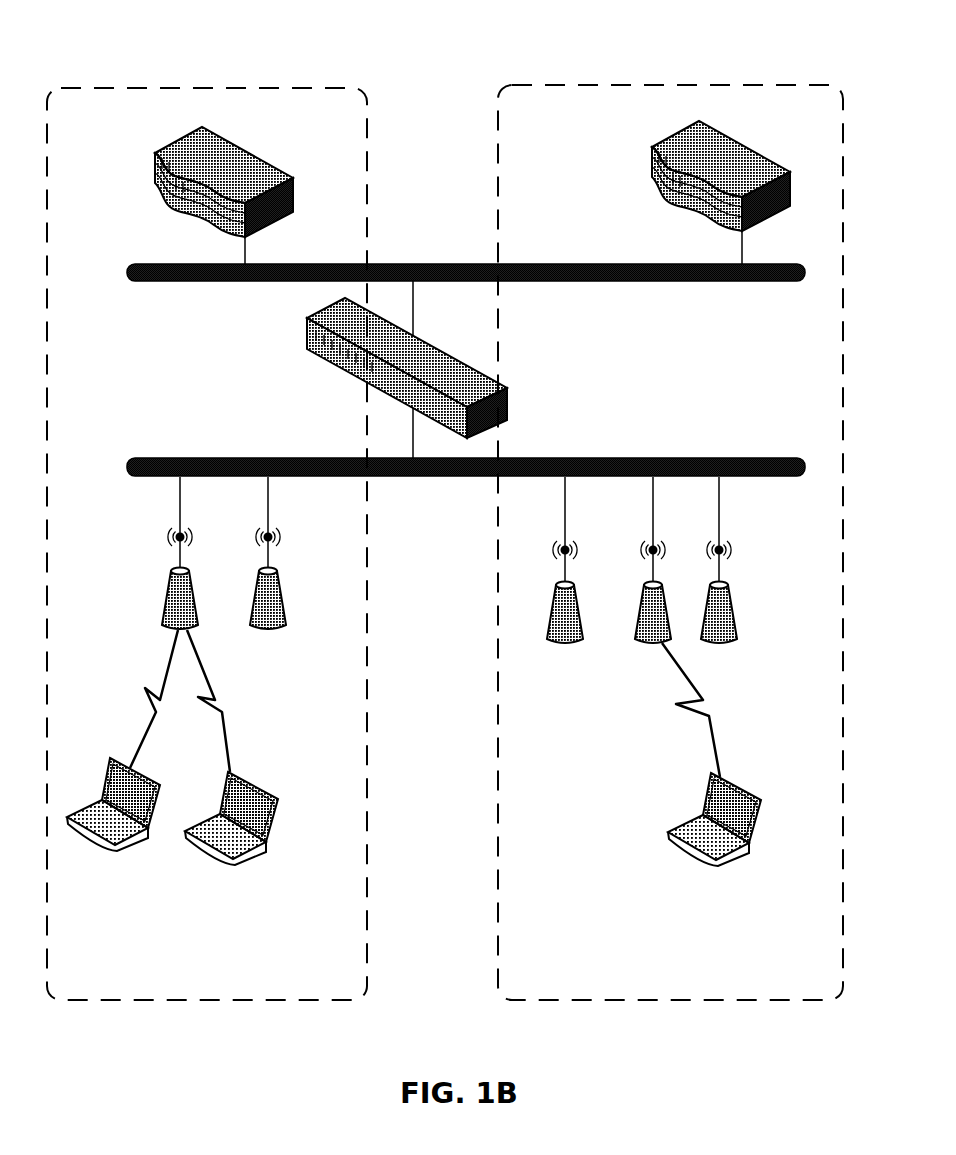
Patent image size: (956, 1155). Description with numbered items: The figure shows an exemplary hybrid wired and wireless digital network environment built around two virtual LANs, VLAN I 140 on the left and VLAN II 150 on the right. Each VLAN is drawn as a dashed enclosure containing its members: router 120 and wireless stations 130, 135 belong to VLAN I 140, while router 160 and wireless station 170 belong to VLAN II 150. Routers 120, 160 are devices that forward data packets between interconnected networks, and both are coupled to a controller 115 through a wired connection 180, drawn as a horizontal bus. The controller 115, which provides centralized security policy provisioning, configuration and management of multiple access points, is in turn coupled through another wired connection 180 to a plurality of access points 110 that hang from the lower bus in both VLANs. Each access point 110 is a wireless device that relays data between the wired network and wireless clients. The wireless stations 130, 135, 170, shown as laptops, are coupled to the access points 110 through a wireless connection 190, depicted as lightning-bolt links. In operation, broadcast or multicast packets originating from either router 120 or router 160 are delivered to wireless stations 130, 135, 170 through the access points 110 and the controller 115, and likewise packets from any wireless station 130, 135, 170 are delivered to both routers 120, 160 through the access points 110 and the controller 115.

The access point 110 is at (280, 588).
The controller 115 is at (330, 396).
The router 120 is at (155, 152).
The wireless station 130 is at (106, 769).
The wireless station 135 is at (243, 780).
The VLAN I 140 is at (73, 88).
The VLAN II 150 is at (838, 85).
The router 160 is at (800, 136).
The wireless station 170 is at (678, 828).
The wired connection 180 is at (425, 264).
The wireless connection 190 is at (138, 722).